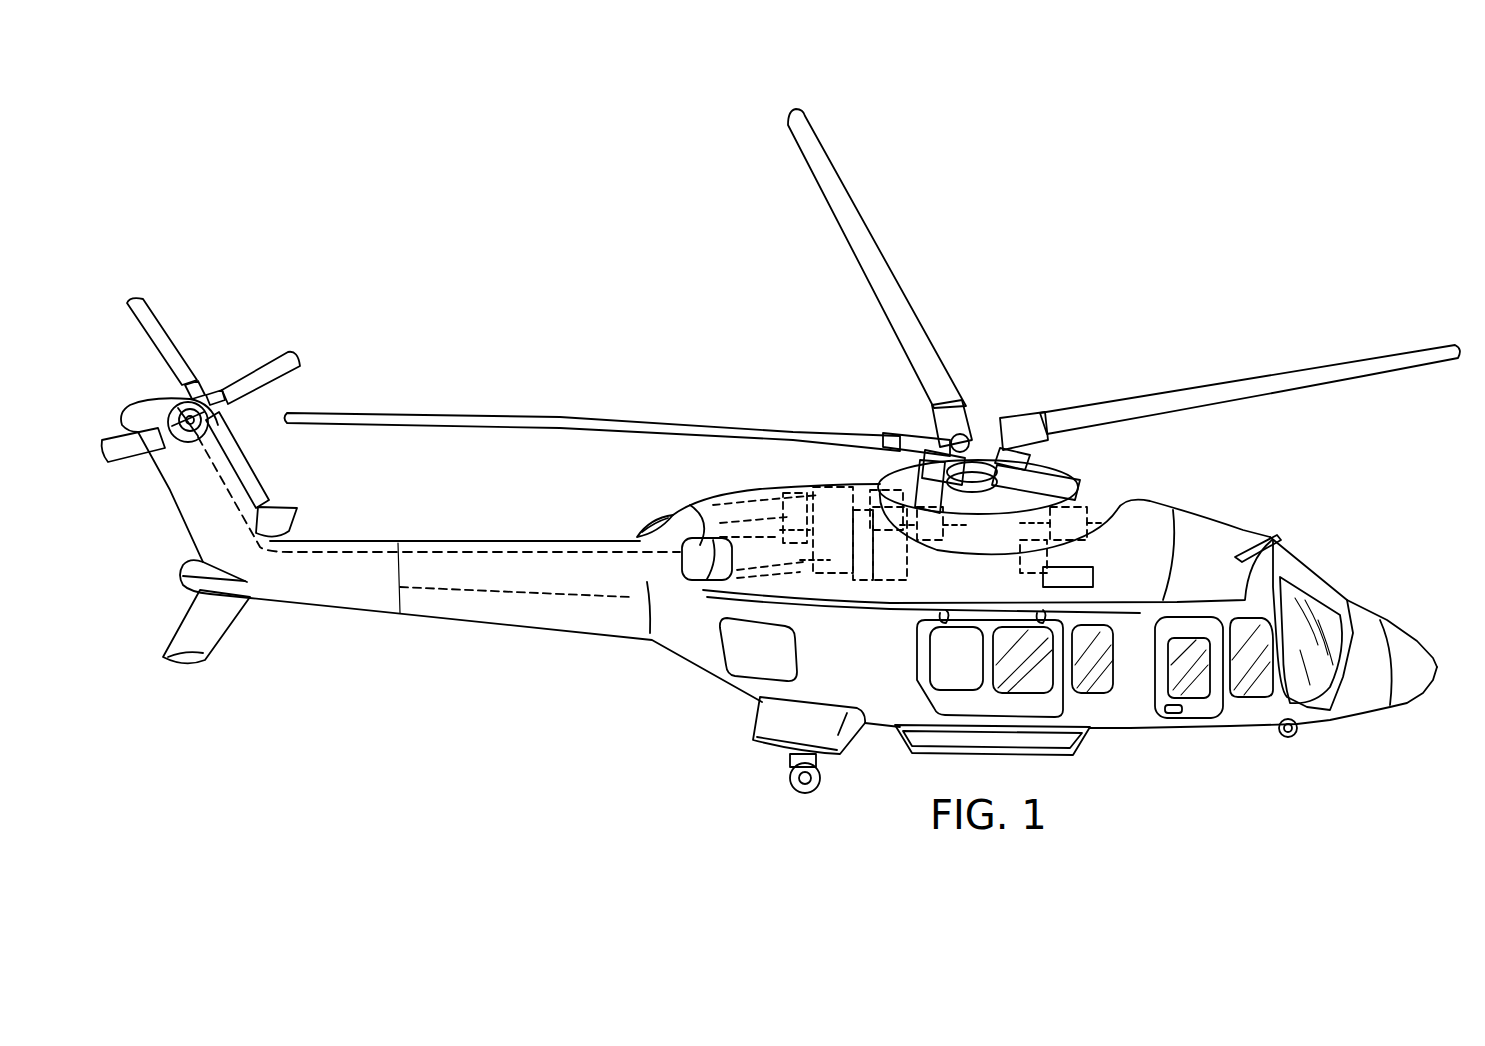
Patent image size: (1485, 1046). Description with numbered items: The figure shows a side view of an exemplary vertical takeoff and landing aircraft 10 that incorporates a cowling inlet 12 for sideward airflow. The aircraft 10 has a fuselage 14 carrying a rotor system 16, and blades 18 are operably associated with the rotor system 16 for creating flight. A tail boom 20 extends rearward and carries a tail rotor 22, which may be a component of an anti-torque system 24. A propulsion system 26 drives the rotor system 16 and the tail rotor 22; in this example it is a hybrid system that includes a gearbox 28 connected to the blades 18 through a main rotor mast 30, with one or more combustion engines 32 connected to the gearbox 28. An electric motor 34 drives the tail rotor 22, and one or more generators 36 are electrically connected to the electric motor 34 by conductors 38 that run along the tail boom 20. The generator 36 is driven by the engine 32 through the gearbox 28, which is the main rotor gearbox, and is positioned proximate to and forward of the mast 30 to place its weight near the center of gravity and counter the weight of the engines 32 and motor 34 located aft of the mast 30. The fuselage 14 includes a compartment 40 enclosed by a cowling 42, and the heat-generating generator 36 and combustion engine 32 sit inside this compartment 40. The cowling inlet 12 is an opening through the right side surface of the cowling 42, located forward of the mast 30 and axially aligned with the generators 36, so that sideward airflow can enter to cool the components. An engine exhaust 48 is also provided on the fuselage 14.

The VTOL aircraft 10 is at (1214, 158).
The cowling inlet 12 is at (1095, 573).
The fuselage 14 is at (1124, 730).
The rotor system 16 is at (998, 378).
The blades 18 is at (883, 253).
The tail boom 20 is at (305, 600).
The tail rotor 22 is at (217, 360).
The anti-torque system 24 is at (143, 540).
The propulsion system 26 is at (766, 350).
The gearbox 28 is at (972, 527).
The main rotor mast 30 is at (937, 555).
The combustion engine 32 is at (820, 478).
The electric motor 34 is at (165, 402).
The generator 36 is at (1040, 540).
The conductors 38 is at (485, 548).
The compartment 40 is at (845, 475).
The cowling 42 is at (1138, 514).
The engine exhaust 48 is at (712, 514).